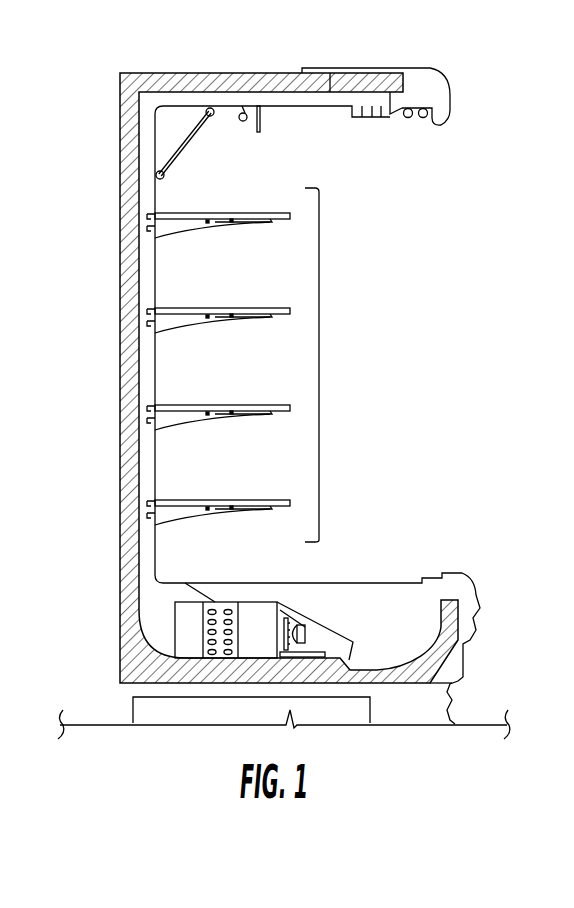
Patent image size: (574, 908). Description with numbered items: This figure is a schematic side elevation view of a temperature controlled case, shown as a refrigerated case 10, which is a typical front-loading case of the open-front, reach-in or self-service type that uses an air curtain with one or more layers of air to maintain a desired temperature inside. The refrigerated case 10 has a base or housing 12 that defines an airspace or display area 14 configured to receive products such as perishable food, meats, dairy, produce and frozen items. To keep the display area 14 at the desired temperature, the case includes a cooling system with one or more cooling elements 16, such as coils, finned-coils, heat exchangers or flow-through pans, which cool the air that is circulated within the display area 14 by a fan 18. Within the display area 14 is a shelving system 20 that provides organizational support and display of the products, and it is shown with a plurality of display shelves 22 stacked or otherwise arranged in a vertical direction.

The refrigerated case 10 is at (196, 52).
The housing 12 is at (146, 245).
The display area 14 is at (188, 283).
The cooling element 16 is at (198, 638).
The fan 18 is at (300, 645).
The shelving system 20 is at (319, 356).
The display shelf 22 is at (188, 503).